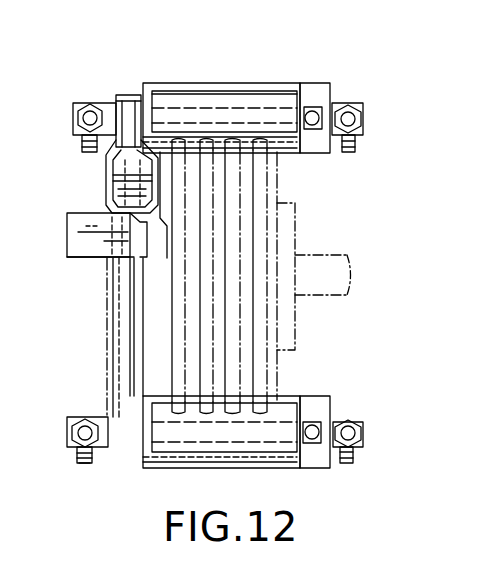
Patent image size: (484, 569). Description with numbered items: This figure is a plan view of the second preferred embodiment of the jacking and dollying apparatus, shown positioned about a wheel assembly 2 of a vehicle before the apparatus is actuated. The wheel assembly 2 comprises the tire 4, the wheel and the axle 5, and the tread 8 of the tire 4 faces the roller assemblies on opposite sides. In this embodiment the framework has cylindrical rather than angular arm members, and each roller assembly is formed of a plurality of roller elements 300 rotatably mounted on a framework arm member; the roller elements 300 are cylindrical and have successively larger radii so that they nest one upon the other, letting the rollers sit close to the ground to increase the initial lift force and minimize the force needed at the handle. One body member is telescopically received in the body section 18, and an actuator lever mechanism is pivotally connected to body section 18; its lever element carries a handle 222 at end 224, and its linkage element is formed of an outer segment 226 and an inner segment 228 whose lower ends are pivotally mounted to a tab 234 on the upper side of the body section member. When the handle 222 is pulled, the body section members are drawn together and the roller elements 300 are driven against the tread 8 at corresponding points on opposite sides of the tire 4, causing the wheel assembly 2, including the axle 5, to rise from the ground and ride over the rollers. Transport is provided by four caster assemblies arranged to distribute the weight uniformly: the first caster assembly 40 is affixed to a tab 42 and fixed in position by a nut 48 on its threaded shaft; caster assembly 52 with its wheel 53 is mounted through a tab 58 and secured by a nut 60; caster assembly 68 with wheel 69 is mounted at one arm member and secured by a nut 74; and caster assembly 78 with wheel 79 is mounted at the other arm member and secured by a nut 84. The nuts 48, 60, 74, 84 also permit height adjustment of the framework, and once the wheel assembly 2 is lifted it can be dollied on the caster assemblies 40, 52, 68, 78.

The wheel assembly 2 is at (309, 306).
The tire 4 is at (277, 181).
The axle 5 is at (334, 254).
The tread 8 is at (233, 291).
The body section 18 is at (120, 355).
The first caster assembly 40 is at (84, 98).
The tab 42 is at (80, 137).
The nut 48 is at (96, 102).
The caster assembly 52 is at (67, 436).
The wheel 53 is at (82, 468).
The tab 58 is at (72, 452).
The nut 60 is at (88, 417).
The caster assembly 68 is at (364, 99).
The wheel 69 is at (354, 148).
The nut 74 is at (365, 110).
The caster assembly 78 is at (373, 440).
The wheel 79 is at (355, 459).
The nut 84 is at (360, 421).
The handle 222 is at (70, 259).
The end 224 is at (98, 231).
The outer segment 226 is at (104, 184).
The inner segment 228 is at (163, 207).
The tab 234 is at (128, 98).
The roller elements 300 is at (243, 84).